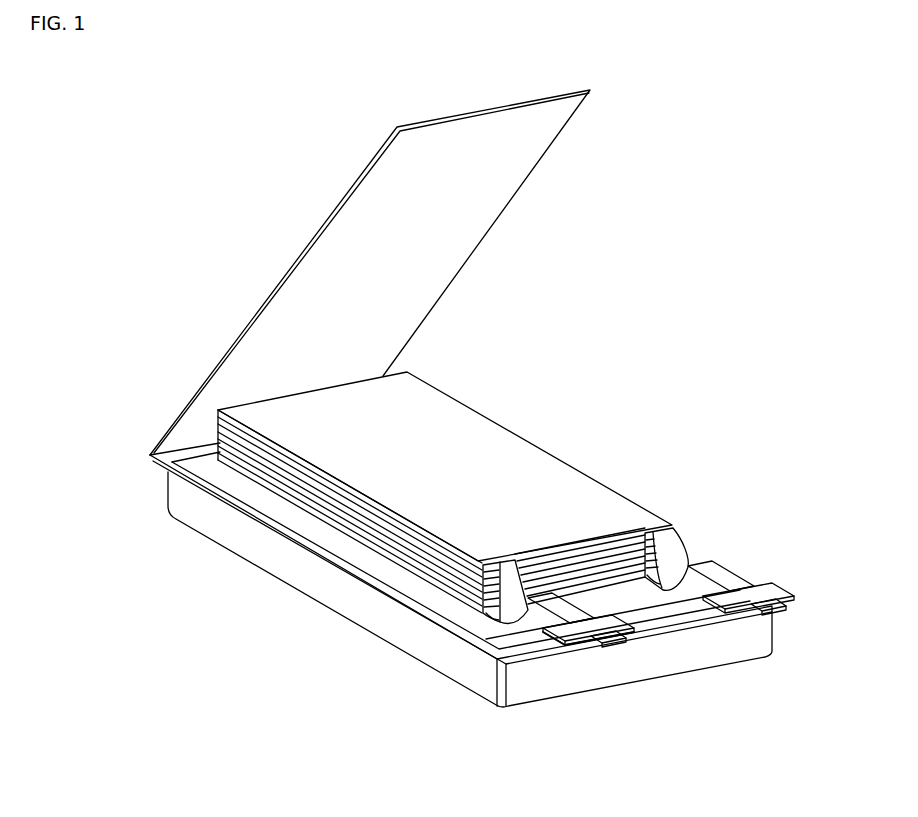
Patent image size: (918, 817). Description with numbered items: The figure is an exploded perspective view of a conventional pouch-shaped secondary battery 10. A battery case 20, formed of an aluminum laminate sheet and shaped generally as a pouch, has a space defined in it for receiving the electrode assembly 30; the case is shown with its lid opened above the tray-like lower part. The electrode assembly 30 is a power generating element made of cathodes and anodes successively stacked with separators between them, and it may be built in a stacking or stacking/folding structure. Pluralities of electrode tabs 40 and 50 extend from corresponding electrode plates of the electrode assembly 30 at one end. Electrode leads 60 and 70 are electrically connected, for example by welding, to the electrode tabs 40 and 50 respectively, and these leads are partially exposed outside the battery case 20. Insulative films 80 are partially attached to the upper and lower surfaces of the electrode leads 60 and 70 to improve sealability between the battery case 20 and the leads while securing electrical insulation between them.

The pouch-shaped secondary battery 10 is at (154, 194).
The battery case 20 is at (150, 455).
The electrode assembly 30 is at (546, 390).
The electrode tab 40 is at (483, 589).
The electrode tab 50 is at (688, 552).
The electrode lead 60 is at (541, 616).
The electrode lead 70 is at (745, 574).
The insulative film 80 is at (557, 640).